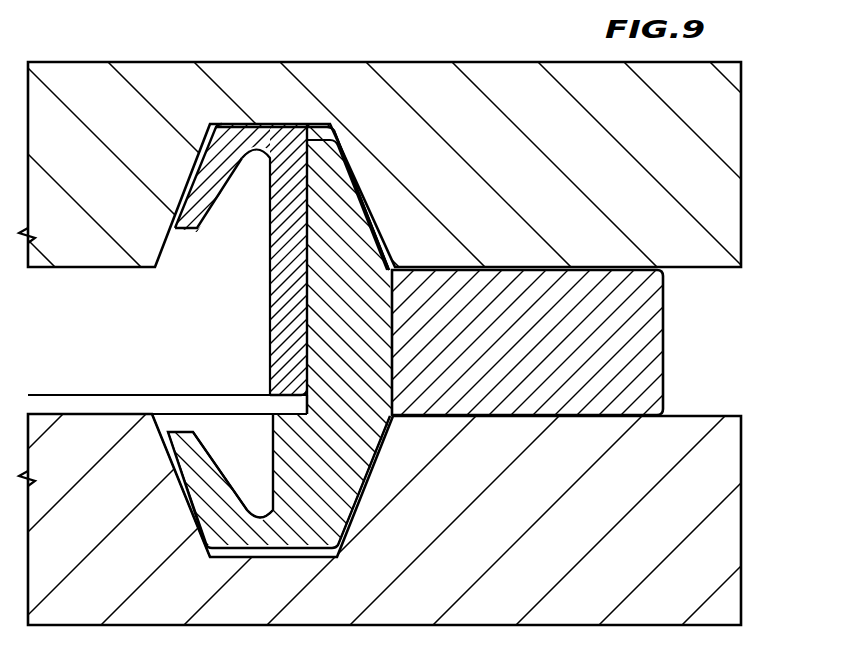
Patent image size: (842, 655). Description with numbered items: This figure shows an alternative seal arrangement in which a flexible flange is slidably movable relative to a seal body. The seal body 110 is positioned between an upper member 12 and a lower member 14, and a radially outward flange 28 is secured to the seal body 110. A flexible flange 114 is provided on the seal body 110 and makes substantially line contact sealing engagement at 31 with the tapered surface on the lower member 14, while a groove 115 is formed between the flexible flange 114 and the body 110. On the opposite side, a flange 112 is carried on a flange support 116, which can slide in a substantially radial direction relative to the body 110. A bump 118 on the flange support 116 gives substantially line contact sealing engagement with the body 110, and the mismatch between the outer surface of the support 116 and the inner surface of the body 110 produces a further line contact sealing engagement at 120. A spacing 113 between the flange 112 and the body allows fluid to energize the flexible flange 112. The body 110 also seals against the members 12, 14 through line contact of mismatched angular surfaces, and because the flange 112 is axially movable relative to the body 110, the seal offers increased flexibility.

The upper member 12 is at (722, 184).
The lower member 14 is at (722, 521).
The radially outward flange 28 is at (640, 338).
The line contact sealing engagement 31 is at (163, 433).
The seal body 110 is at (336, 314).
The flange 112 is at (196, 189).
The spacing 113 is at (250, 186).
The flange 114 is at (203, 487).
The groove 115 is at (256, 493).
The flange support 116 is at (287, 264).
The bump 118 is at (298, 382).
The line contact sealing engagement 120 is at (333, 157).